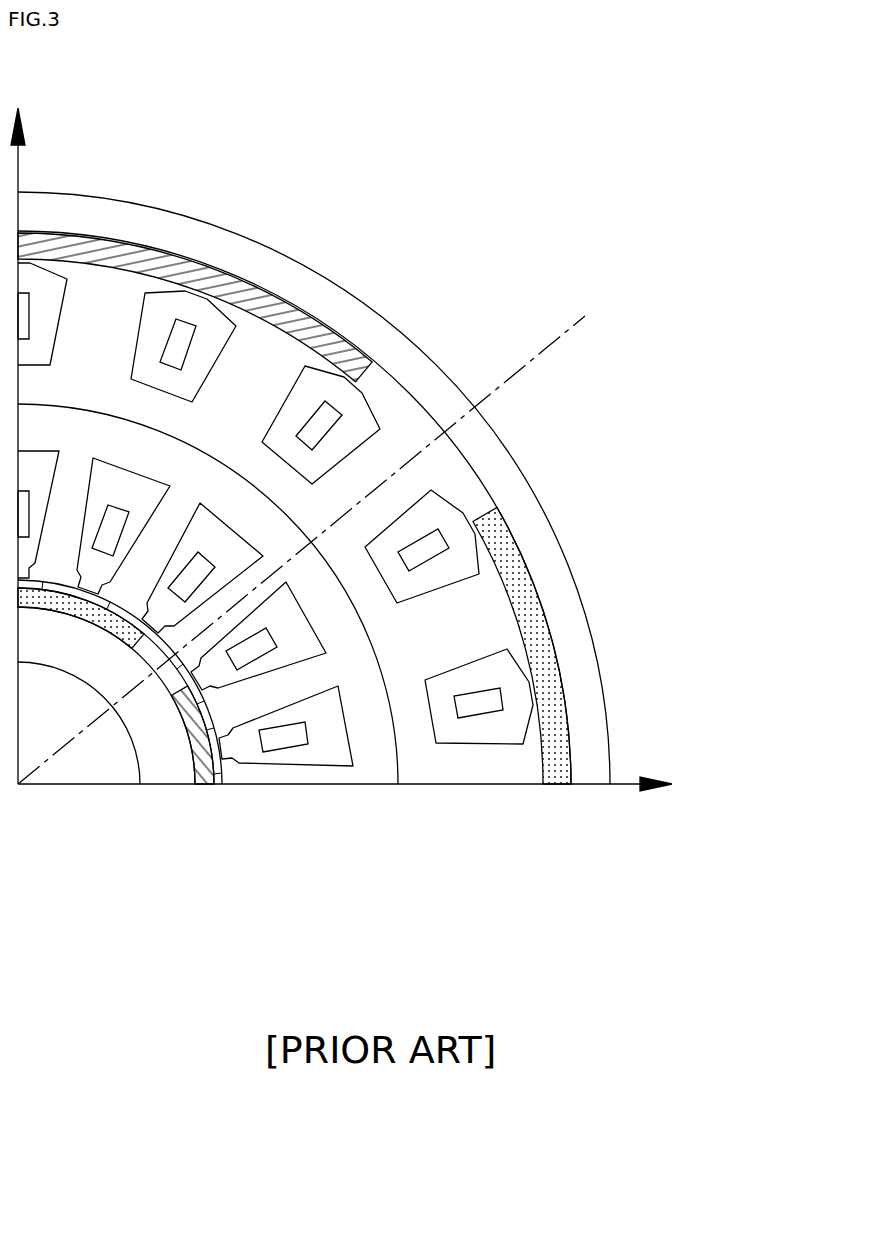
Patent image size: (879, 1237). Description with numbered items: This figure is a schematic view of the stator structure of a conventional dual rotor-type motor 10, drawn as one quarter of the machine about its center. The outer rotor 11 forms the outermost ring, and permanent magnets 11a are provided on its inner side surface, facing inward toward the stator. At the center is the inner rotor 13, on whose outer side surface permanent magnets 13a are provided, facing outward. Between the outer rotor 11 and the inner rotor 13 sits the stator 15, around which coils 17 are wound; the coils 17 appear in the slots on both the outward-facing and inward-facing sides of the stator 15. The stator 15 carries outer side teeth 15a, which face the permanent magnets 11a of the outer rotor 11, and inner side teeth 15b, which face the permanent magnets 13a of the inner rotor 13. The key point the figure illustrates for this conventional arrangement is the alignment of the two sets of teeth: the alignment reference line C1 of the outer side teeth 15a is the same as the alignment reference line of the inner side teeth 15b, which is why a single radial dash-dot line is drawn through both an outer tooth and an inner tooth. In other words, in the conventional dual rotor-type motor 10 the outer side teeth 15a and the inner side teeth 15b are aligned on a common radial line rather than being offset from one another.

The dual rotor-type motor 10 is at (592, 89).
The outer rotor 11 is at (585, 655).
The permanent magnets 11a is at (558, 773).
The inner rotor 13 is at (150, 766).
The permanent magnets 13a is at (205, 770).
The stator 15 is at (689, 590).
The outer side teeth 15a is at (407, 478).
The inner side teeth 15b is at (480, 577).
The coils 17 is at (328, 412).
The alignment reference line C1 is at (341, 534).